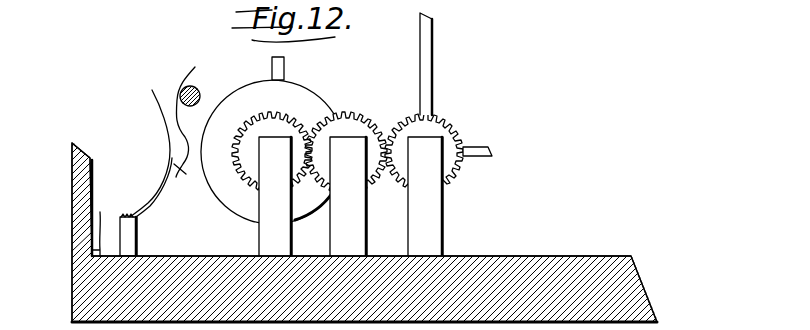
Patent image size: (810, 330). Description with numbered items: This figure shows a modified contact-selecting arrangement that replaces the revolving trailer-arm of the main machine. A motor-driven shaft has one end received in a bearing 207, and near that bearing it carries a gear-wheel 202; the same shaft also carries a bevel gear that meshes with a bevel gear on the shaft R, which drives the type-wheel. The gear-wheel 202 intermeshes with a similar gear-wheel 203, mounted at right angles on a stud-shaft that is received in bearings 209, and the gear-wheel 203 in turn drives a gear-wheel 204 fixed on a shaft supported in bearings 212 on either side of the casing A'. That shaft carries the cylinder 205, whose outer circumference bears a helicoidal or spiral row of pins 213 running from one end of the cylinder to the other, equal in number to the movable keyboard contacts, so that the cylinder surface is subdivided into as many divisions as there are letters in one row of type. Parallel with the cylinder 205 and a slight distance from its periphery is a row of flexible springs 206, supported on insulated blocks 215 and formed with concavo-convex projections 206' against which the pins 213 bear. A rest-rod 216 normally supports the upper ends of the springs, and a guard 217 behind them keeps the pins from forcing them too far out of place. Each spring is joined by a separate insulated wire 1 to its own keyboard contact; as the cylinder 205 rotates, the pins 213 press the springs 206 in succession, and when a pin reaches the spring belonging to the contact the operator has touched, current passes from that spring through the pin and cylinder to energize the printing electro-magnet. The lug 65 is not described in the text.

The insulated wires 1 is at (90, 233).
The casing A' is at (336, 232).
The shaft R is at (433, 67).
The stop lug 65 is at (494, 152).
The gear-wheel 202 is at (456, 128).
The gear-wheel 203 is at (353, 120).
The gear-wheel 204 is at (267, 111).
The cylinder 205 is at (317, 68).
The flexible springs 206 is at (153, 122).
The concavo-convex projections 206' is at (187, 181).
The bearing 207 is at (445, 222).
The bearings 209 is at (348, 197).
The bearings 212 is at (258, 240).
The pins 213 is at (272, 60).
The insulated blocks 215 is at (137, 233).
The rest-rod 216 is at (181, 91).
The guard 217 is at (157, 101).